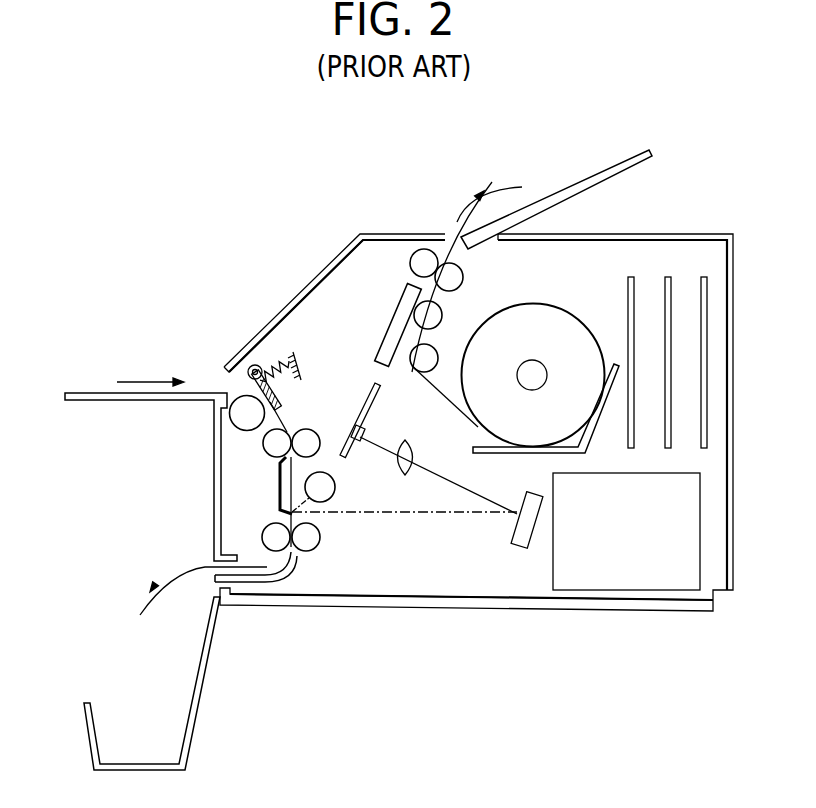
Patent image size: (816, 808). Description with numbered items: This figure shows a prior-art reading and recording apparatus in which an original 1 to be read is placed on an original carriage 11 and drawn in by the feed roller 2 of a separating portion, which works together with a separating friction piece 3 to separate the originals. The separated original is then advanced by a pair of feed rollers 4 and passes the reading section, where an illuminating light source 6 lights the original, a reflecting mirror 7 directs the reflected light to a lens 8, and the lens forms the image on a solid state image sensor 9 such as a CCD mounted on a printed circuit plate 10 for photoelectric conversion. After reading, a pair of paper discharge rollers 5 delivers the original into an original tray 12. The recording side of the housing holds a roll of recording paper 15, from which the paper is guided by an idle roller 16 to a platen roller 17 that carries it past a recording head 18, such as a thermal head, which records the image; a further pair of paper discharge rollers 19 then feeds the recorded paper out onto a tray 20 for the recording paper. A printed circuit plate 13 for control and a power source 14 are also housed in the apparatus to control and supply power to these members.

The original 1 is at (32, 374).
The feed roller 2 is at (247, 420).
The separating friction piece 3 is at (272, 362).
The pair of feed rollers 4 is at (311, 434).
The pair of paper discharge rollers 5 is at (306, 543).
The illuminating light source 6 is at (323, 490).
The reflecting mirror 7 is at (519, 548).
The lens 8 is at (414, 456).
The solid state image sensor 9 is at (365, 432).
The printed circuit plate for photoelectric conversion 10 is at (346, 455).
The original carriage 11 is at (93, 402).
The original tray 12 is at (197, 730).
The printed circuit plate for control 13 is at (704, 277).
The power source 14 is at (622, 575).
The roll of recording paper 15 is at (540, 312).
The idle roller 16 is at (418, 357).
The platen roller 17 is at (432, 314).
The recording head 18 is at (397, 323).
The pair of paper discharge rollers 19 is at (453, 273).
The tray for the recording paper 20 is at (600, 172).